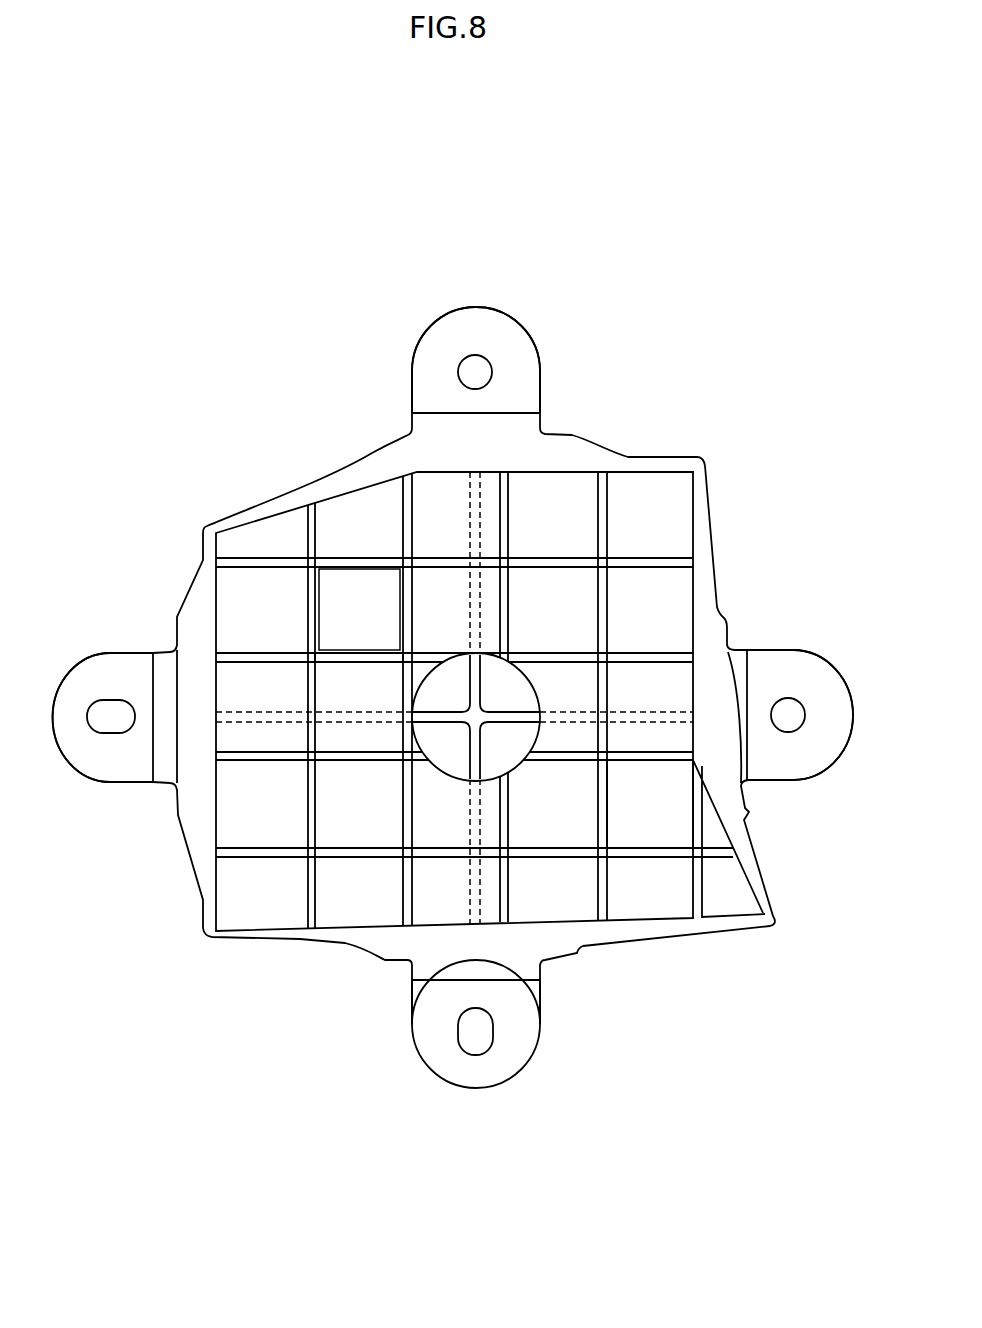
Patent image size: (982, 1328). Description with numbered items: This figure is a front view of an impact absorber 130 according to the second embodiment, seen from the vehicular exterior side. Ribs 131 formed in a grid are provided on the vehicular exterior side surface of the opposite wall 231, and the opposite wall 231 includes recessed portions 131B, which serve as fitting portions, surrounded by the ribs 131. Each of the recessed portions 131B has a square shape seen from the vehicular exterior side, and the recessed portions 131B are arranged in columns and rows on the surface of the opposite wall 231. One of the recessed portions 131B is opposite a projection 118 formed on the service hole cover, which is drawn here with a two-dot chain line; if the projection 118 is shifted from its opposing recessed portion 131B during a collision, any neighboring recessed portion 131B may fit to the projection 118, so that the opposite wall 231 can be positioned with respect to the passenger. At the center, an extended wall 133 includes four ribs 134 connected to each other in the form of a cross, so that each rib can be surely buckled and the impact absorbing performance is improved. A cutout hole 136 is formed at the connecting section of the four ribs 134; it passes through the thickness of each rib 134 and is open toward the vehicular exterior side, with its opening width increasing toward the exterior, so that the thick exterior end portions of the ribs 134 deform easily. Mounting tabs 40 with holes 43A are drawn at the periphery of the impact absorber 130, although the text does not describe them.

The impact absorber 130 is at (234, 416).
The mounting tab 40 is at (445, 337).
The mounting hole 43A is at (472, 388).
The cutout hole 136 is at (528, 684).
The projection 118 is at (352, 594).
The ribs 131 is at (268, 662).
The recessed portions 131B is at (336, 654).
The extended wall 133 is at (422, 867).
The ribs 134 is at (471, 748).
The opposite wall 231 is at (650, 828).